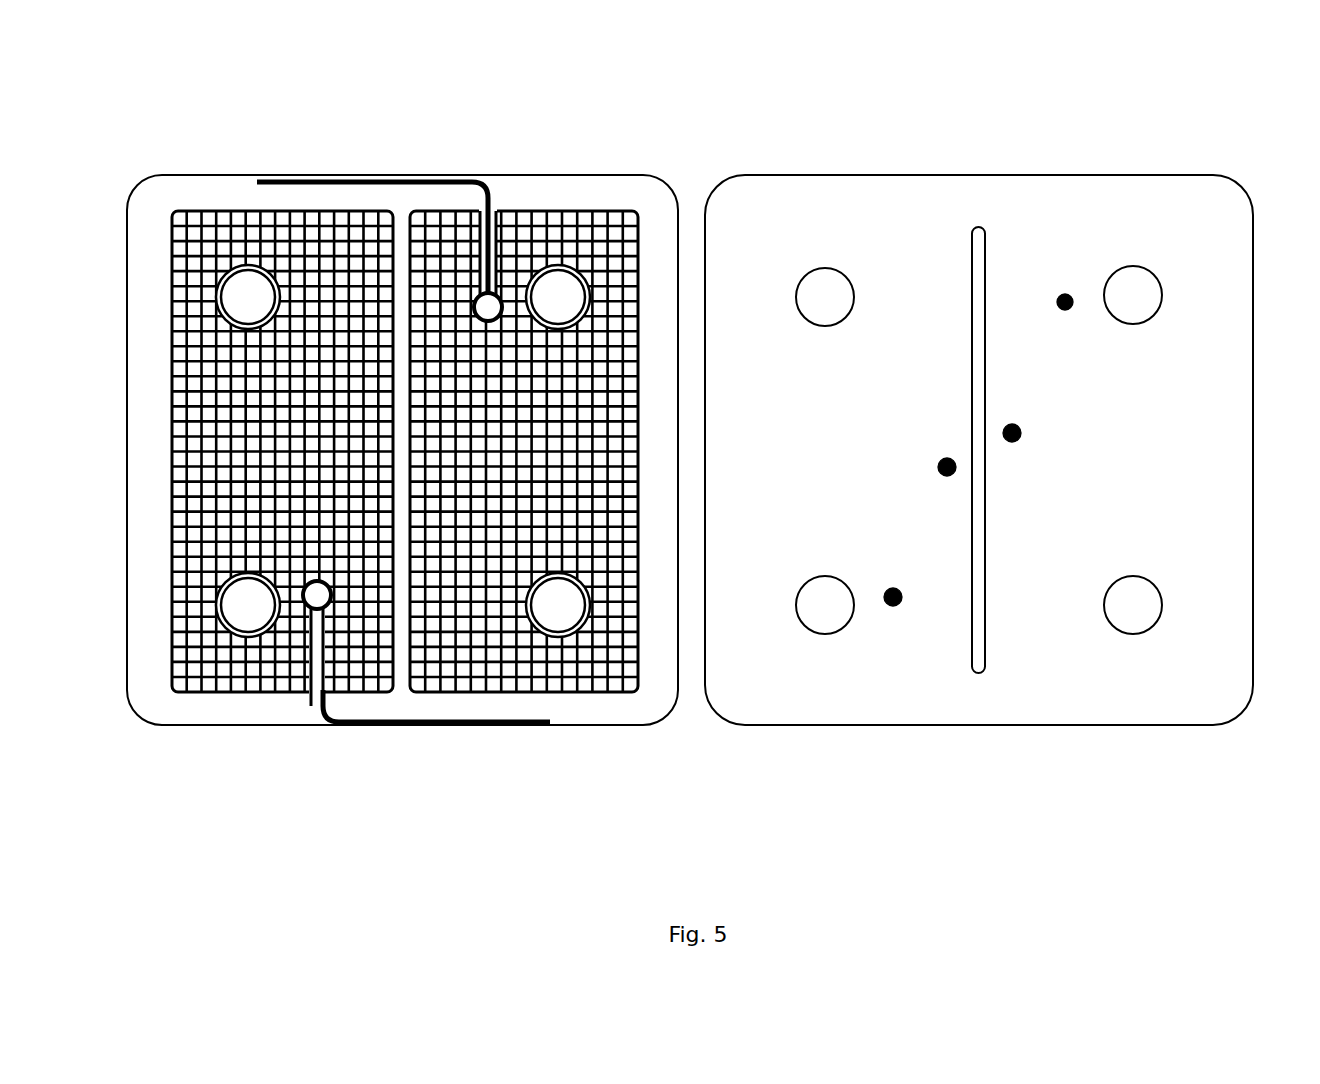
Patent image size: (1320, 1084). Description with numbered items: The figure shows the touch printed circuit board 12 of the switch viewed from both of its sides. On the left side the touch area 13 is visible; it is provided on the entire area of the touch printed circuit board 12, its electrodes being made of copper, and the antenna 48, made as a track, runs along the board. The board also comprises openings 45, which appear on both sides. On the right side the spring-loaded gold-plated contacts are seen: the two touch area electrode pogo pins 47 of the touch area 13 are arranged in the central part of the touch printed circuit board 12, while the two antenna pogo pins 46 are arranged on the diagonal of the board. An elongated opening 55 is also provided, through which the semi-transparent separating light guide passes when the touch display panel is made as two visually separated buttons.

The touch printed circuit board 12 is at (743, 698).
The touch area 13 is at (435, 232).
The openings of the touch printed circuit board 45 is at (1135, 583).
The two antenna pogo pins 46 is at (893, 597).
The two touch area electrode pogo pins 47 is at (1012, 433).
The antenna 48 is at (490, 203).
The opening for passage of the separating light guide 55 is at (980, 260).